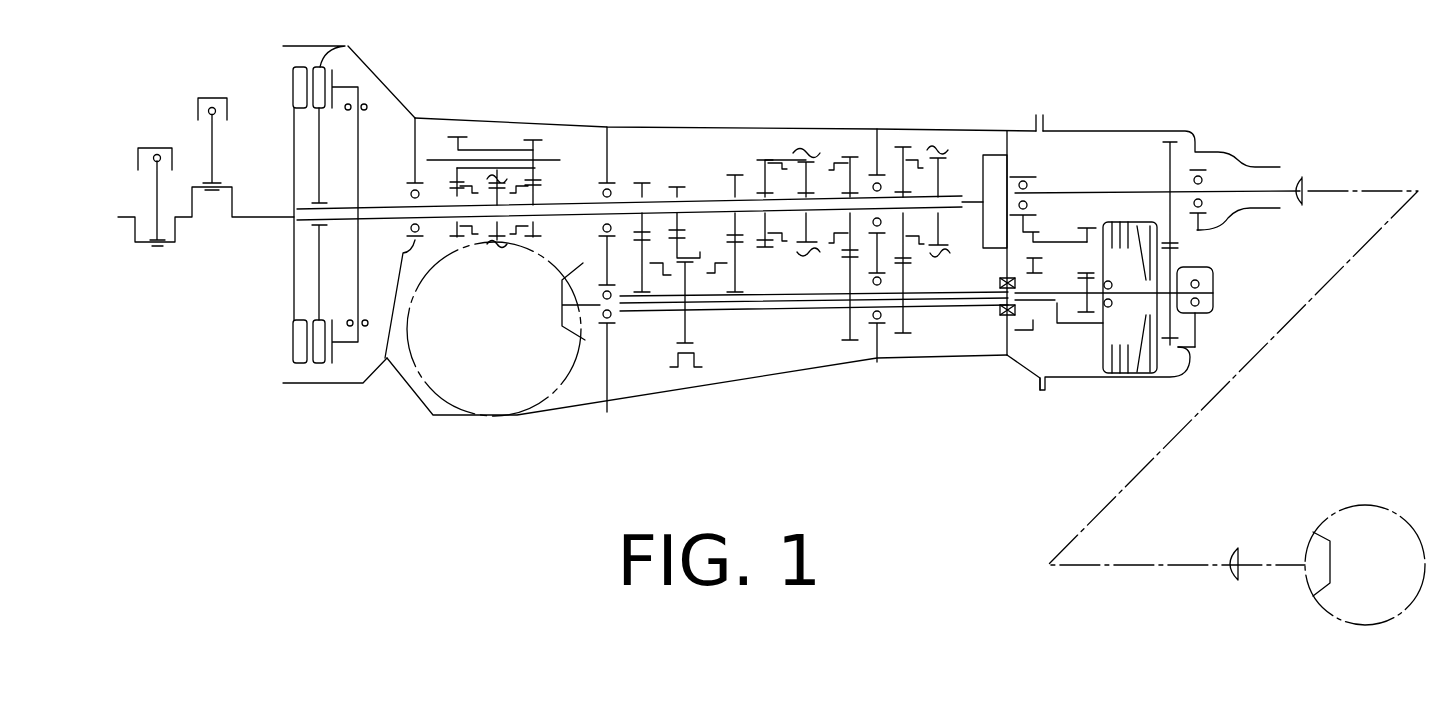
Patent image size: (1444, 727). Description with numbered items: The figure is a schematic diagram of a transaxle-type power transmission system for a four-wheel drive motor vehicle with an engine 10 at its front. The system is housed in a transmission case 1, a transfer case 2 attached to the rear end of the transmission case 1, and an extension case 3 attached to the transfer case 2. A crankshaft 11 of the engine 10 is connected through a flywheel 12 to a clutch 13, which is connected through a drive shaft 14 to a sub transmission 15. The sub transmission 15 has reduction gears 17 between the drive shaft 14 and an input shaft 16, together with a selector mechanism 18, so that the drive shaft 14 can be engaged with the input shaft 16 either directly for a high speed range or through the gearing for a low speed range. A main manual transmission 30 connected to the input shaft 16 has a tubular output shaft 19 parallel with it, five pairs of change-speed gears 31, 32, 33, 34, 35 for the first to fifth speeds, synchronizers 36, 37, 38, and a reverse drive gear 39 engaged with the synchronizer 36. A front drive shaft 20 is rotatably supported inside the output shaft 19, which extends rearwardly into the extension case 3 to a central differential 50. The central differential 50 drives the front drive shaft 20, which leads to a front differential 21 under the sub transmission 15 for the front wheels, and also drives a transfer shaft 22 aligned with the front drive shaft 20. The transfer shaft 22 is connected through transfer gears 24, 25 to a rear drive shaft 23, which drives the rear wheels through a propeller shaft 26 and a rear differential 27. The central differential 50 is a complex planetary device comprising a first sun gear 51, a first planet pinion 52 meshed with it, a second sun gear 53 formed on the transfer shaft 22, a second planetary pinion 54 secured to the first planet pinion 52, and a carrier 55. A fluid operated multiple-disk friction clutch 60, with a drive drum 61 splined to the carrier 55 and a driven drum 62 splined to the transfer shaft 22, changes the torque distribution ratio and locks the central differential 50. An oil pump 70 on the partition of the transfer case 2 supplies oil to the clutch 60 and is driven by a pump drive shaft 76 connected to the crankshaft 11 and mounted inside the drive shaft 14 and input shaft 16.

The transmission case 1 is at (590, 122).
The transfer case 2 is at (978, 130).
The extension case 3 is at (1110, 130).
The engine 10 is at (166, 126).
The crankshaft 11 is at (258, 218).
The flywheel 12 is at (293, 89).
The clutch 13 is at (345, 47).
The drive shaft 14 is at (372, 207).
The sub transmission 15 is at (505, 136).
The input shaft 16 is at (702, 198).
The reduction gears 17 is at (458, 138).
The selector mechanism 18 is at (497, 173).
The tubular output shaft 19 is at (826, 310).
The front drive shaft 20 is at (795, 302).
The front differential 21 is at (540, 398).
The transfer shaft 22 is at (1183, 278).
The rear drive shaft 23 is at (1125, 192).
The transfer gear 24 is at (1180, 352).
The transfer gear 25 is at (1180, 140).
The propeller shaft 26 is at (1357, 188).
The rear differential 27 is at (1382, 508).
The main manual transmission 30 is at (802, 125).
The change-speed gears 31 is at (641, 183).
The change-speed gears 32 is at (735, 173).
The change-speed gears 33 is at (765, 157).
The change-speed gears 34 is at (862, 158).
The change-speed gears 35 is at (903, 145).
The synchronizer 36 is at (693, 352).
The synchronizer 37 is at (807, 150).
The synchronizer 38 is at (936, 143).
The reverse drive gear 39 is at (673, 187).
The central differential 50 is at (1056, 348).
The first sun gear 51 is at (1030, 326).
The first planet pinion 52 is at (1023, 222).
The second sun gear 53 is at (1078, 306).
The second planetary pinion 54 is at (1088, 228).
The carrier 55 is at (1072, 330).
The fluid operated multiple-disk friction clutch 60 is at (1144, 386).
The drive drum 61 is at (1122, 373).
The driven drum 62 is at (1147, 345).
The oil pump 70 is at (983, 160).
The pump drive shaft 76 is at (962, 207).